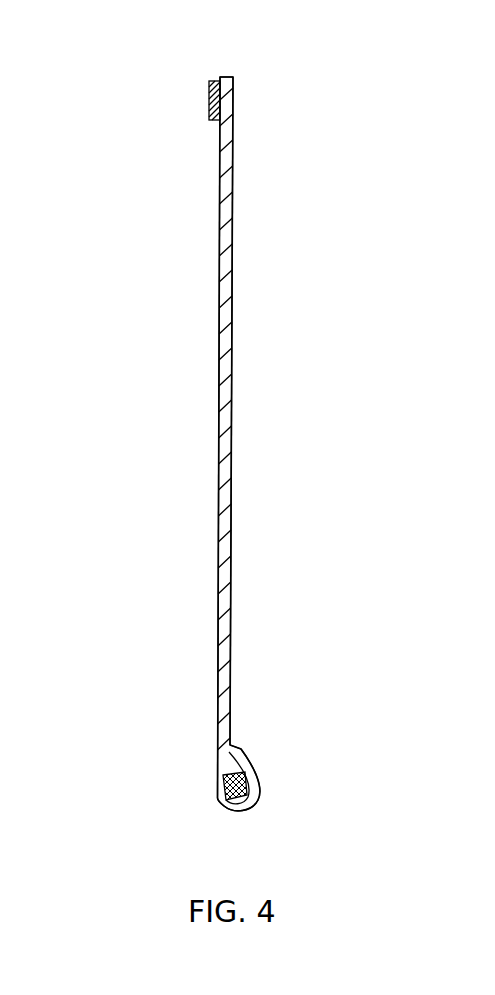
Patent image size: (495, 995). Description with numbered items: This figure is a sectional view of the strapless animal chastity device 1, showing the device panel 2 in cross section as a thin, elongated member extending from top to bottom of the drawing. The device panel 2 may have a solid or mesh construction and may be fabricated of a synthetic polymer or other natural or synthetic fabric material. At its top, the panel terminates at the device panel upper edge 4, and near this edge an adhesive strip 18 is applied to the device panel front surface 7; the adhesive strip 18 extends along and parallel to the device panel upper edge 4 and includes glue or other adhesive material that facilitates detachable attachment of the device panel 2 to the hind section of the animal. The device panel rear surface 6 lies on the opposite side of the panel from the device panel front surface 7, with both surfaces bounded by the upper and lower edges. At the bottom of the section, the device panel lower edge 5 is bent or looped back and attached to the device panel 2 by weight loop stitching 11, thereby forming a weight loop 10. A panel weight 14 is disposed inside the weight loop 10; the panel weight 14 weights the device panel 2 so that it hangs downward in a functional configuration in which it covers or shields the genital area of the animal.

The device 1 is at (143, 57).
The device panel 2 is at (211, 192).
The device panel upper edge 4 is at (228, 77).
The device panel lower edge 5 is at (237, 746).
The device panel rear surface 6 is at (233, 300).
The device panel front surface 7 is at (219, 336).
The weight loop 10 is at (258, 788).
The weight loop stitching 11 is at (241, 753).
The panel weight 14 is at (221, 785).
The adhesive strip 18 is at (209, 96).